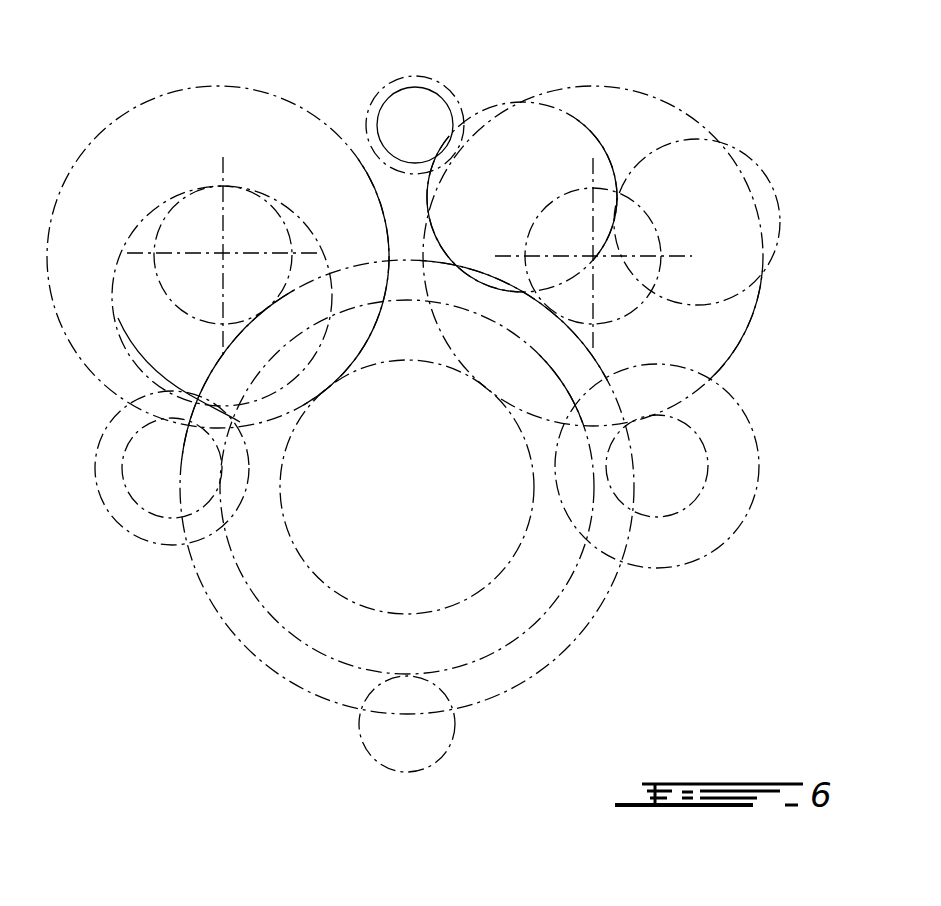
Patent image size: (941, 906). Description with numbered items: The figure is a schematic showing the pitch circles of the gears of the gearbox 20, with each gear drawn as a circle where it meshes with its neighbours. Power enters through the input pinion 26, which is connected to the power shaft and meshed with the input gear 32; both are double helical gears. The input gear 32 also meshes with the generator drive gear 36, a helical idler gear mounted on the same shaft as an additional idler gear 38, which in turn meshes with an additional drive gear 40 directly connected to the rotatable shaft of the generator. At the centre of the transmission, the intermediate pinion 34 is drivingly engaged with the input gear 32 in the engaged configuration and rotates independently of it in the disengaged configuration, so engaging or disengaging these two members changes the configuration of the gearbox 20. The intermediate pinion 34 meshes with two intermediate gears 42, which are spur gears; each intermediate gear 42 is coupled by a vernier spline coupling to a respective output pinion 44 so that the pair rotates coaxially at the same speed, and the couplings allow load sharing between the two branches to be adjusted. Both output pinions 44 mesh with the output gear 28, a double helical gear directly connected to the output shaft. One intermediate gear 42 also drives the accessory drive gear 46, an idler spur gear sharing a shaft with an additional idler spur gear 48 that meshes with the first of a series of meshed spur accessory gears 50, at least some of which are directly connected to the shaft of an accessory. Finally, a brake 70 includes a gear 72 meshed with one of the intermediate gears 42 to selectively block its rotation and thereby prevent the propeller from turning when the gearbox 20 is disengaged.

The gearbox 20 is at (848, 130).
The input pinion 26 is at (452, 742).
The output gear 28 is at (277, 671).
The input gear 32 is at (553, 598).
The intermediate pinion 34 is at (497, 580).
The generator drive gear 36 is at (148, 512).
The additional idler gear 38 is at (95, 490).
The additional drive gear 40 is at (130, 344).
The intermediate gear 42 is at (99, 131).
The output pinion 44 is at (156, 242).
The accessory drive gear 46 is at (452, 88).
The additional idler spur gear 48 is at (393, 86).
The accessory gear 50 is at (577, 119).
The brake 70 is at (764, 431).
The gear 72 is at (707, 477).